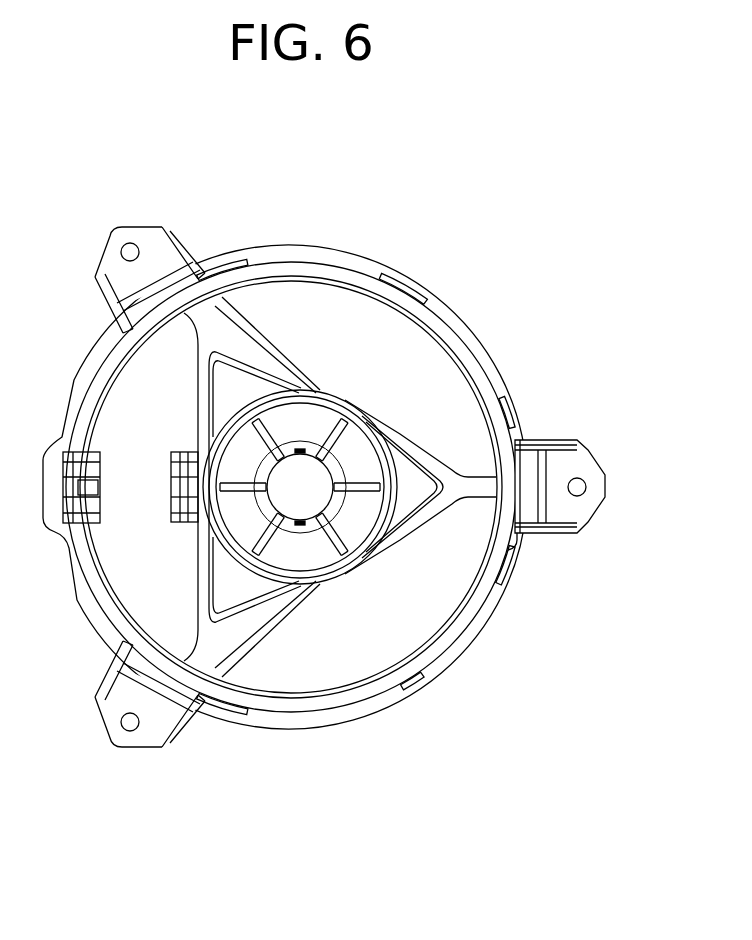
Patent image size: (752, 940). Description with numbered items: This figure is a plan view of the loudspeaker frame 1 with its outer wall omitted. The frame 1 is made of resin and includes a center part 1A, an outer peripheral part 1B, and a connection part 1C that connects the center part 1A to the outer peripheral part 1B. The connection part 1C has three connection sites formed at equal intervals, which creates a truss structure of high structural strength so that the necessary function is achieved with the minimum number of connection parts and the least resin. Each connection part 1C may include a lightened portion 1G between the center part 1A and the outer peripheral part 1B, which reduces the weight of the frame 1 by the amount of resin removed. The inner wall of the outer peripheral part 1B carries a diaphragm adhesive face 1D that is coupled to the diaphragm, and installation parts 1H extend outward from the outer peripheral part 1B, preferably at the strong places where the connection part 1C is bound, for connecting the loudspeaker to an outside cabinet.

The frame 1 is at (536, 250).
The center part 1A is at (322, 477).
The outer peripheral part 1B is at (311, 243).
The connection part 1C is at (425, 517).
The diaphragm adhesive face 1D is at (303, 706).
The lightened portion 1G is at (400, 497).
The installation part 1H is at (587, 497).